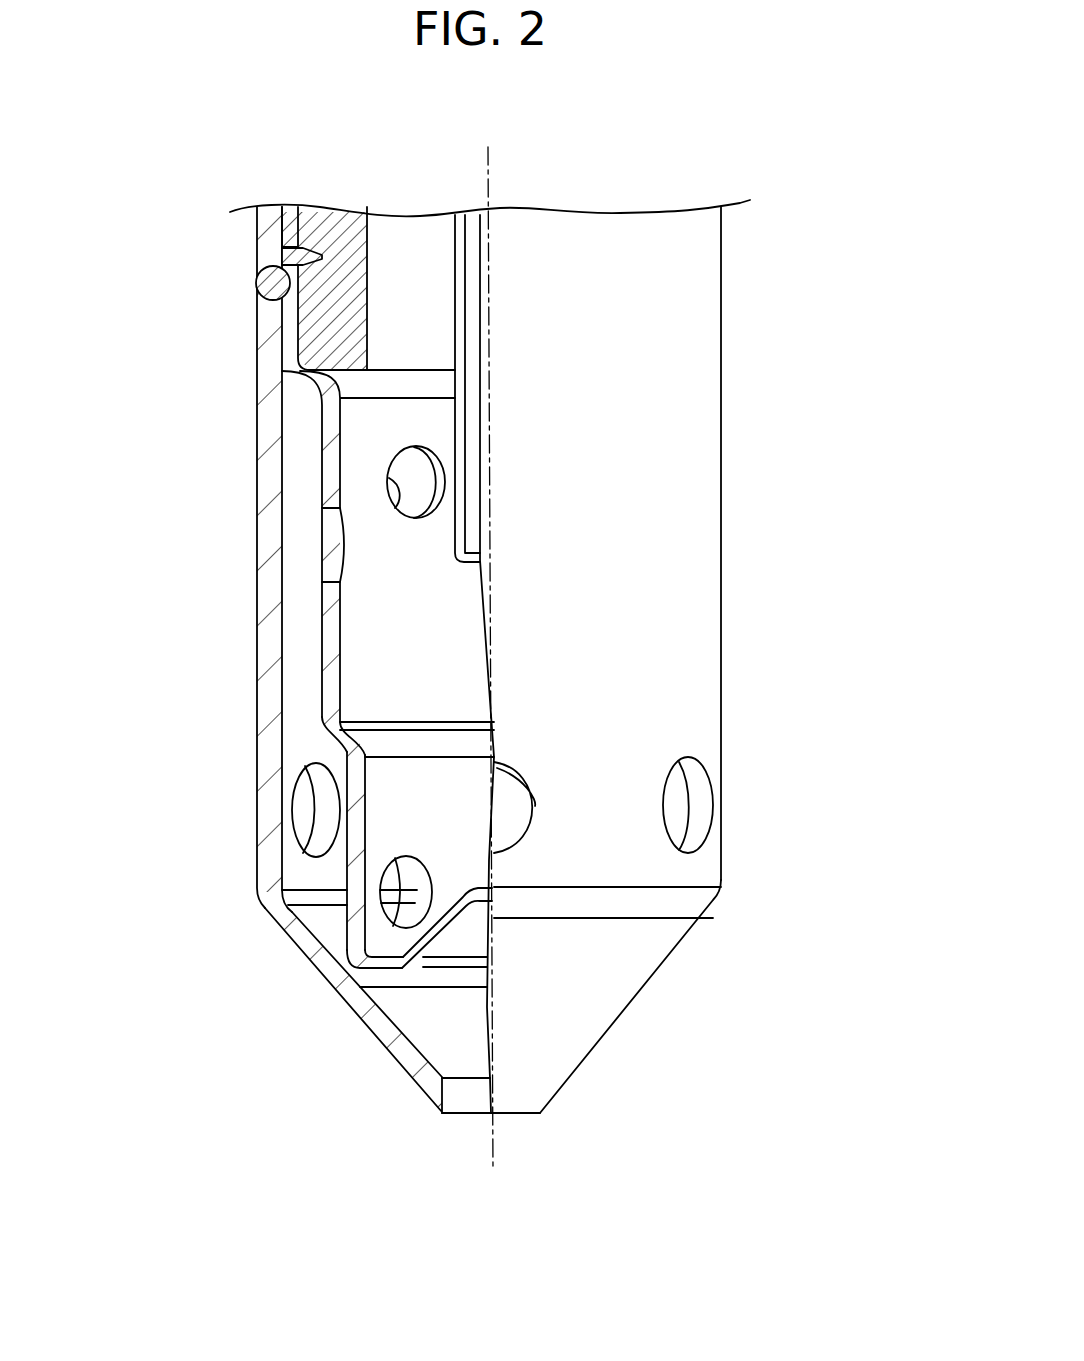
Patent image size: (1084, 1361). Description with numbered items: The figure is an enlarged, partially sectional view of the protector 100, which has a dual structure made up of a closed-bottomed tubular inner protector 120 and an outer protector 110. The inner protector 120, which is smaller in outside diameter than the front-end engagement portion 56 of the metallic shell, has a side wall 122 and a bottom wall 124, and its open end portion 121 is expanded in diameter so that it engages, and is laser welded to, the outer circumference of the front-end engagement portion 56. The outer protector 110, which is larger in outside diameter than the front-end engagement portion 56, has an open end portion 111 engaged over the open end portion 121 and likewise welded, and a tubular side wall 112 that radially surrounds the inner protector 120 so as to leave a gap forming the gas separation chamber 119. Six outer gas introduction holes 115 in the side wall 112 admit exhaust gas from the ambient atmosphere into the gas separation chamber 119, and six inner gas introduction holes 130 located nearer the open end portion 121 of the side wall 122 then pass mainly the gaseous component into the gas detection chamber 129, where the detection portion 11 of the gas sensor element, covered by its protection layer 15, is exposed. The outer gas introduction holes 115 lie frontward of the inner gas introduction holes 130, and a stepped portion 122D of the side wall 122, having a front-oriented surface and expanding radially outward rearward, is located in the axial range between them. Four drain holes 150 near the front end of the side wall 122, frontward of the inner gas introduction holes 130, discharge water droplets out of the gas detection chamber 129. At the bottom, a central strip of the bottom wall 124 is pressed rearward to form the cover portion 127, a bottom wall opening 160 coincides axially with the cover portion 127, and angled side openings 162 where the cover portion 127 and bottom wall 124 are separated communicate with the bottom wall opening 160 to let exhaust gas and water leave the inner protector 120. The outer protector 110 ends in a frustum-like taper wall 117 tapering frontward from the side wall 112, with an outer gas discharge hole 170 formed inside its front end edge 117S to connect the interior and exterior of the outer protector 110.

The protector 100 is at (790, 165).
The outer protector 110 is at (697, 475).
The open end portion 111 is at (257, 347).
The side wall 112 is at (258, 718).
The outer gas introduction holes 115 is at (305, 810).
The taper wall 117 is at (335, 960).
The front end edge 117S is at (430, 1130).
The gas separation chamber 119 is at (295, 480).
The inner protector 120 is at (365, 705).
The open end portion 121 is at (338, 285).
The side wall 122 is at (322, 652).
The stepped portion 122D is at (333, 737).
The bottom wall 124 is at (378, 968).
The cover portion 127 is at (490, 878).
The gas detection chamber 129 is at (450, 627).
The inner gas introduction holes 130 is at (332, 555).
The drain holes 150 is at (382, 920).
The bottom wall opening 160 is at (432, 972).
The side openings 162 is at (467, 940).
The outer gas discharge hole 170 is at (462, 1097).
The detection portion 11 is at (455, 538).
The protection layer 15 is at (453, 323).
The front-end engagement portion 56 is at (357, 242).